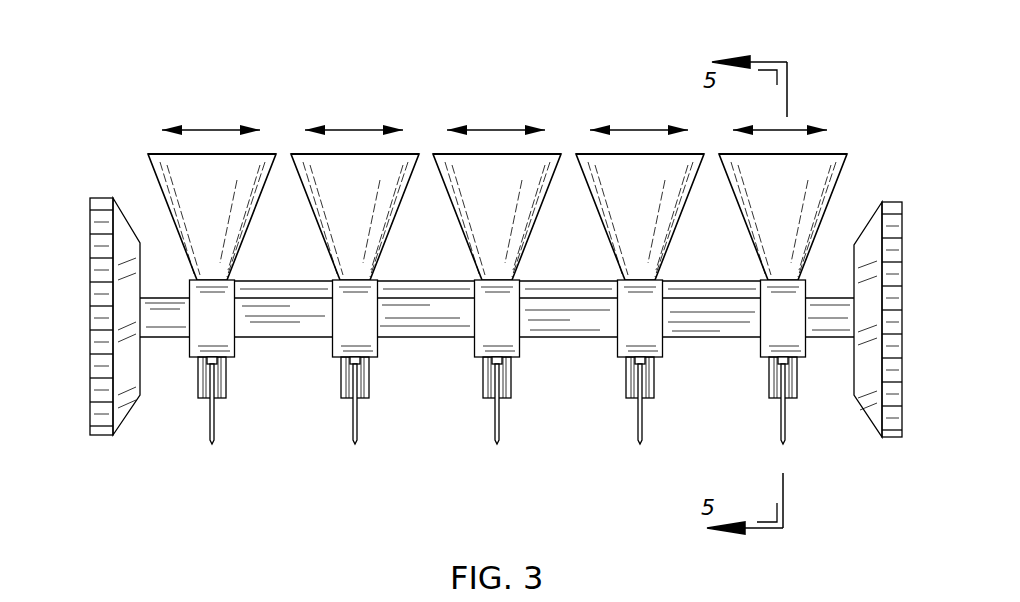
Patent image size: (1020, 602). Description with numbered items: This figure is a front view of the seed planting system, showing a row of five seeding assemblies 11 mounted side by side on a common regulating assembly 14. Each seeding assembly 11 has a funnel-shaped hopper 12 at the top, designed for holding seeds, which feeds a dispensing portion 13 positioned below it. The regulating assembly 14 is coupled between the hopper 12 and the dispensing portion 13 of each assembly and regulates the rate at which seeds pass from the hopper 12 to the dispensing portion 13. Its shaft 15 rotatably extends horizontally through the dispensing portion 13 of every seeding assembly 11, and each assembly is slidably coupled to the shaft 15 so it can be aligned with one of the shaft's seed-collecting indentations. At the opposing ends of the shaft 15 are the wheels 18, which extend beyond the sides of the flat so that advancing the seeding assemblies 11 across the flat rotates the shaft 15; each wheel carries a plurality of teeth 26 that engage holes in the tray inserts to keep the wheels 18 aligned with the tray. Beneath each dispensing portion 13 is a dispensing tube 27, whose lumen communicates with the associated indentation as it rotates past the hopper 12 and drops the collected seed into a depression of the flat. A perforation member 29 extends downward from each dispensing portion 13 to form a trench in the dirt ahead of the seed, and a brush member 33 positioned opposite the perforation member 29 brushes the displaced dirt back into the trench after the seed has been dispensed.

The seeding assemblies 11 is at (208, 92).
The hopper 12 is at (247, 167).
The dispensing portion 13 is at (197, 343).
The regulating assembly 14 is at (75, 309).
The shaft 15 is at (168, 305).
The wheels 18 is at (125, 407).
The teeth 26 is at (103, 225).
The dispensing tube 27 is at (218, 360).
The perforation member 29 is at (210, 440).
The brush member 33 is at (205, 392).